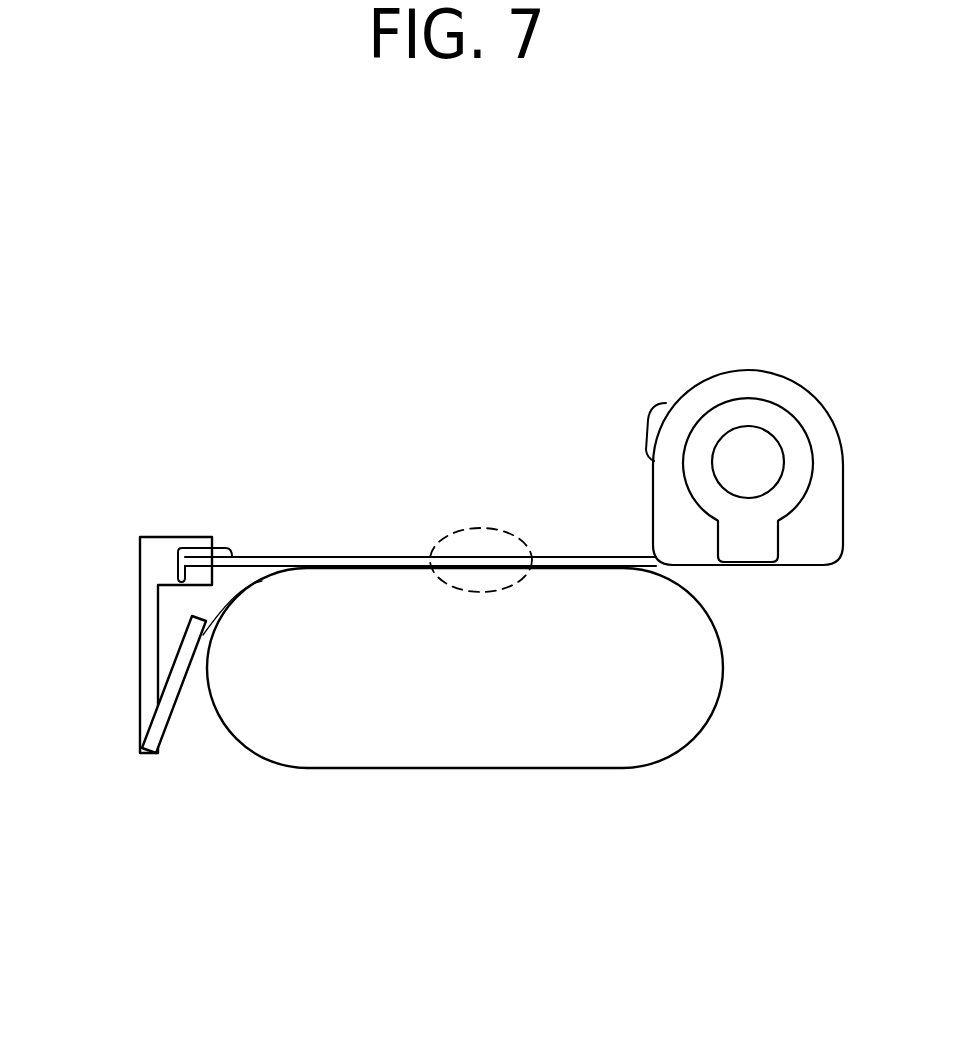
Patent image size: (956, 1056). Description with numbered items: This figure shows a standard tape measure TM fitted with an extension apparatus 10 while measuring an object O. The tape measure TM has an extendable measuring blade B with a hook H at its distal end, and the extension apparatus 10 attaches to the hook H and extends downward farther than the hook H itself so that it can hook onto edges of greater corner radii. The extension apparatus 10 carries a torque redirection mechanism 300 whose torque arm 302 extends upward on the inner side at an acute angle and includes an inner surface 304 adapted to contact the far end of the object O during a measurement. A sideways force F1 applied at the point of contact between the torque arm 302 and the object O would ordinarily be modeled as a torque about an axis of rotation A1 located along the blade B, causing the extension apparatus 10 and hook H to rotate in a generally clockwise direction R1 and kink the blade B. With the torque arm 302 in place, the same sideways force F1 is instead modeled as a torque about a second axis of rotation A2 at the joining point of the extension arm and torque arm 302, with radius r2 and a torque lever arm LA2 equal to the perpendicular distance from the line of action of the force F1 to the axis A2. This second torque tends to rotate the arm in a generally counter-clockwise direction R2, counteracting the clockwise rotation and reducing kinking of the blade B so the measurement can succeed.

The extension apparatus 10 is at (179, 657).
The torque redirection mechanism 300 is at (187, 779).
The torque arm 302 is at (262, 581).
The inner surface 304 is at (212, 636).
The hook H is at (156, 552).
The blade B is at (327, 552).
The tape measure TM is at (741, 318).
The object O is at (707, 755).
The axis of rotation A1 is at (465, 528).
The axis of rotation A2 is at (145, 767).
The clockwise rotation direction R1 is at (213, 427).
The counter-clockwise rotation direction R2 is at (90, 808).
The torque lever arm LA2 is at (125, 647).
The sideways force F1 is at (221, 643).
The torque radius r2 is at (208, 630).